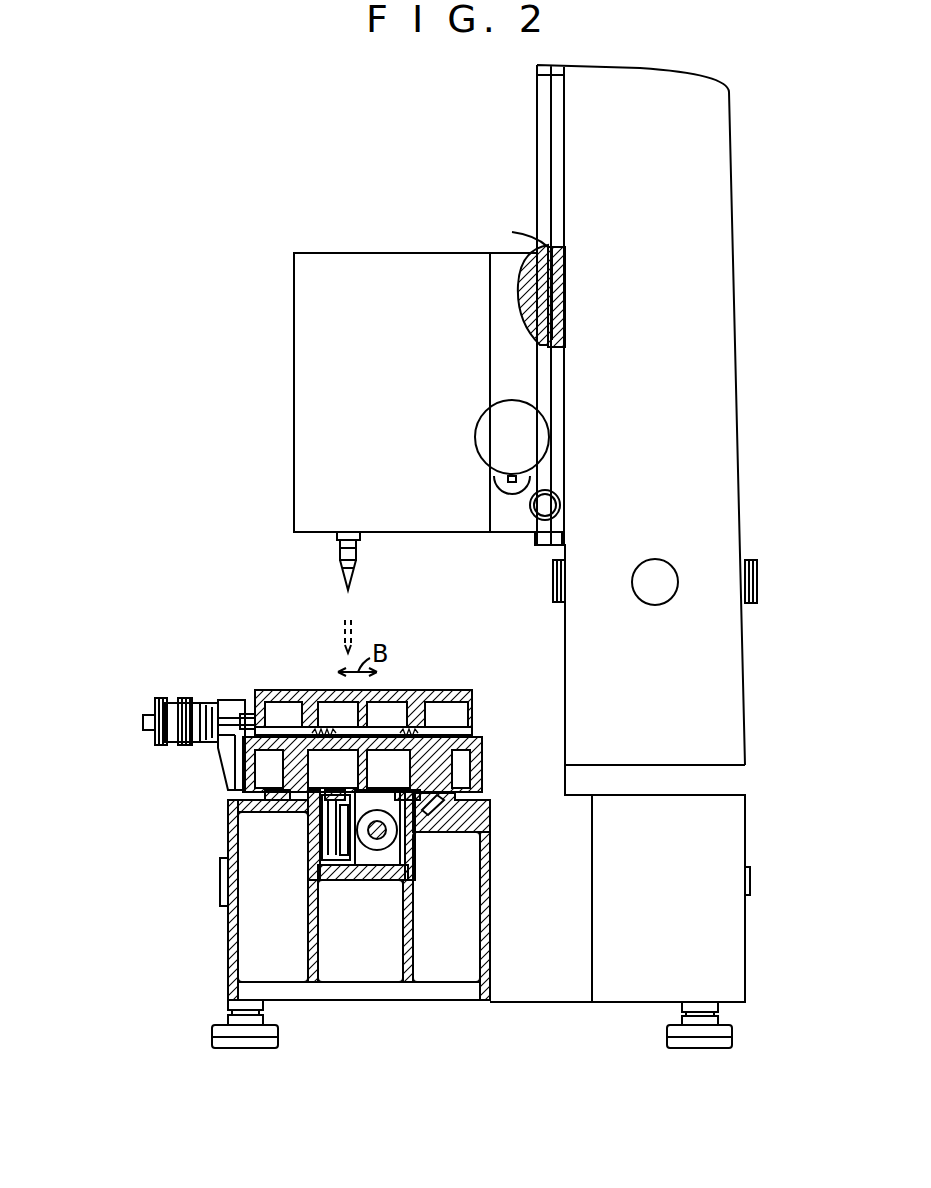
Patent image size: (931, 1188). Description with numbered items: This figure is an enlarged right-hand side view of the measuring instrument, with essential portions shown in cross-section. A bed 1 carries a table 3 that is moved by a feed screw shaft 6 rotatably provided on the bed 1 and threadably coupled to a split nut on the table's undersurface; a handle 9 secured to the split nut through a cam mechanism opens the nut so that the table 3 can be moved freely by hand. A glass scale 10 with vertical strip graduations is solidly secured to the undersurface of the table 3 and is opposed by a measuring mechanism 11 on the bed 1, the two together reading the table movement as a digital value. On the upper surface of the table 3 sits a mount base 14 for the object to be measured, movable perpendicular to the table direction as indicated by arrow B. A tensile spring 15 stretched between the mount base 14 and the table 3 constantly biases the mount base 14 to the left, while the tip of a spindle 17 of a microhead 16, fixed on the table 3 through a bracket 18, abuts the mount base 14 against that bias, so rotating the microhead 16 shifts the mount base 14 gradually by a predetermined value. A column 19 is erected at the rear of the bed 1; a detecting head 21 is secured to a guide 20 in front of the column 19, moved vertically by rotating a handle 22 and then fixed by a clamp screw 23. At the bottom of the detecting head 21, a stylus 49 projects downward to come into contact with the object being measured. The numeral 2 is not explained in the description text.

The bed 1 is at (228, 812).
The lower table (Y-table) 2 is at (297, 792).
The table 3 is at (470, 713).
The feed screw shaft 6 is at (377, 845).
The handle 9 is at (387, 796).
The glass scale 10 is at (328, 830).
The measuring mechanism 11 is at (335, 840).
The mount base 14 is at (448, 695).
The tensile spring 15 is at (320, 728).
The microhead 16 is at (183, 700).
The spindle 17 is at (248, 715).
The bracket 18 is at (213, 762).
The column 19 is at (729, 297).
The guide 20 is at (545, 250).
The detecting head 21 is at (297, 415).
The handle 22 is at (490, 432).
The clamp screw 23 is at (557, 500).
The stylus (probing needle) 49 is at (356, 575).